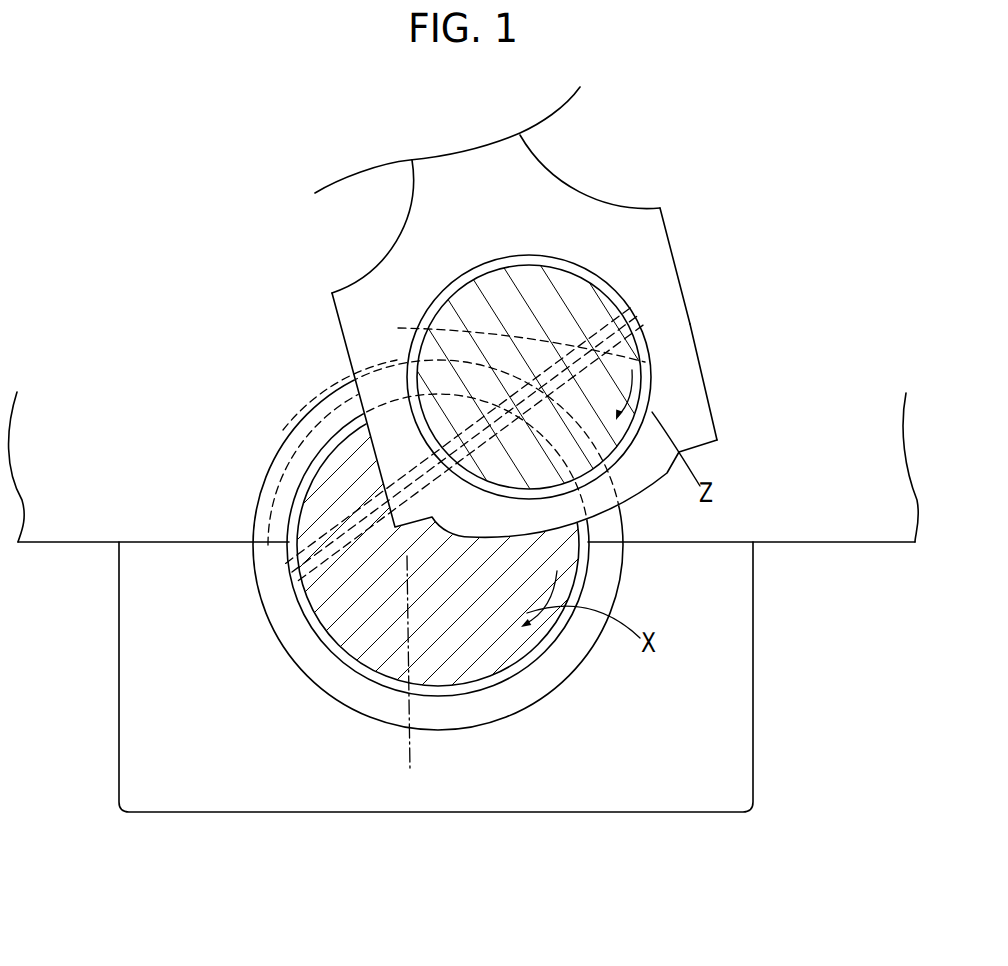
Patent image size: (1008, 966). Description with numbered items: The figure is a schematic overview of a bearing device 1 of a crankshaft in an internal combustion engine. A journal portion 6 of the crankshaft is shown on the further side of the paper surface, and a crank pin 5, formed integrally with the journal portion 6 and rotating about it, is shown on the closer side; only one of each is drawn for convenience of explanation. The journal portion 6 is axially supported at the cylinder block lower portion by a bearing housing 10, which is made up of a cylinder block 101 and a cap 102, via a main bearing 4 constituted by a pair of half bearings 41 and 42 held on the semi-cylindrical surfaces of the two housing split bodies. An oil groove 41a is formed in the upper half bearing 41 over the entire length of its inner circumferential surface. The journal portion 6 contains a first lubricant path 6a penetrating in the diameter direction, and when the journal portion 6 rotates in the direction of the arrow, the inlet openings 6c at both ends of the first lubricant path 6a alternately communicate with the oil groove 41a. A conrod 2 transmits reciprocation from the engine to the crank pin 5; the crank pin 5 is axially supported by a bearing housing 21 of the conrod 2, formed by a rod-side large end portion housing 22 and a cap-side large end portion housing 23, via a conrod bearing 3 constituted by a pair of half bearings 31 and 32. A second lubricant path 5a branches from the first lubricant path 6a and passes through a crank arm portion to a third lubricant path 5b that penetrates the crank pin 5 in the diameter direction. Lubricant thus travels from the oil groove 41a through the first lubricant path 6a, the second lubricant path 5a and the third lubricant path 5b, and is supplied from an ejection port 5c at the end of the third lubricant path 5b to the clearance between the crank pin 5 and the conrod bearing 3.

The bearing device 1 is at (109, 218).
The conrod 2 is at (544, 312).
The bearing housing 21 is at (749, 289).
The rod-side large end portion housing 22 is at (692, 290).
The cap-side large end portion housing 23 is at (704, 380).
The conrod bearing 3 is at (600, 341).
The half bearing 31 is at (478, 272).
The half bearing 32 is at (606, 462).
The main bearing 4 is at (388, 549).
The half bearing 41 is at (253, 474).
The oil groove 41a is at (262, 515).
The half bearing 42 is at (296, 596).
The crank pin 5 is at (456, 370).
The second lubricant path 5a is at (283, 430).
The third lubricant path 5b is at (410, 330).
The ejection port 5c is at (642, 316).
The journal portion 6 is at (350, 648).
The first lubricant path 6a is at (407, 678).
The inlet openings 6c is at (284, 577).
The bearing housing 10 is at (464, 602).
The cylinder block 101 is at (820, 523).
The cap 102 is at (753, 725).